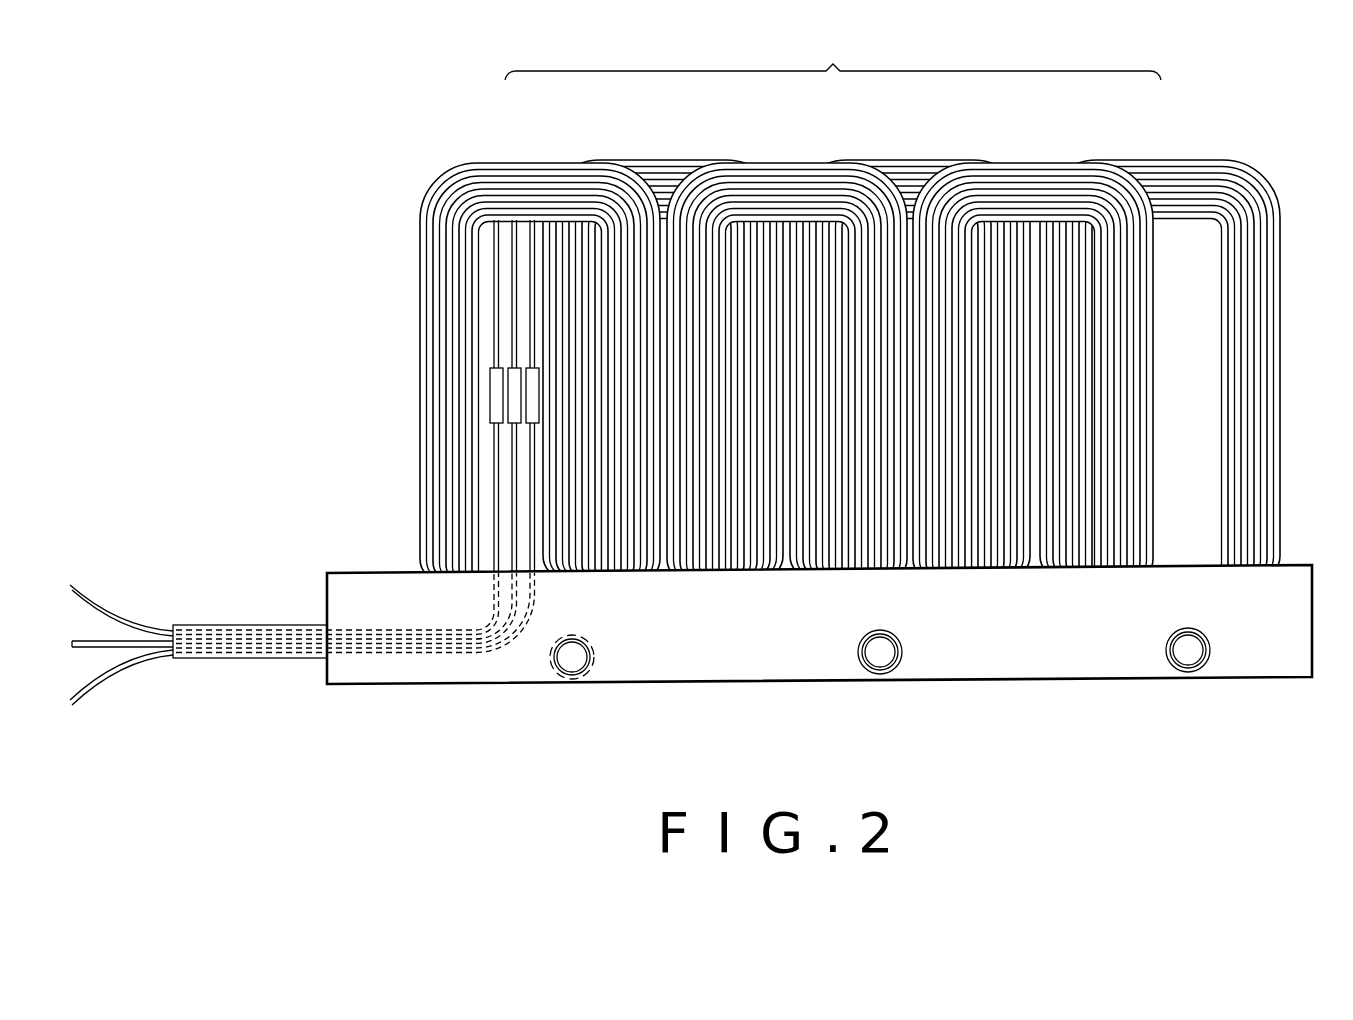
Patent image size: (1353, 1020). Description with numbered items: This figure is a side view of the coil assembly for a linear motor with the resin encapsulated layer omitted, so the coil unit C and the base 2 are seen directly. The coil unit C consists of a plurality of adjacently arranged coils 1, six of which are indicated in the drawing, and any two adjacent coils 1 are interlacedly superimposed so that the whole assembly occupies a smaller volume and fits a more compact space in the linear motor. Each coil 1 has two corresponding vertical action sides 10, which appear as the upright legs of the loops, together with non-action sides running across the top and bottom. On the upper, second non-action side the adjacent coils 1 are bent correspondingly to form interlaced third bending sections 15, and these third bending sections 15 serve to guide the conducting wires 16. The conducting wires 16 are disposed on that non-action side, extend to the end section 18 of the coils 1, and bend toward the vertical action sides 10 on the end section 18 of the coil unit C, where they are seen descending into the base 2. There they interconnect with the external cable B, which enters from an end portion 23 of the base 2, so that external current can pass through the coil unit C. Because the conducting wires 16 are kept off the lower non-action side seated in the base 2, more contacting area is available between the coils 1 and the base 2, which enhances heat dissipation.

The coil 1 is at (883, 332).
The base 2 is at (638, 648).
The vertical action side 10 is at (1257, 367).
The third bending section 15 is at (500, 186).
The conducting wire 16 is at (493, 275).
The end section 18 is at (485, 337).
The end portion 23 is at (327, 598).
The external cable B is at (218, 648).
The coil unit C is at (833, 60).